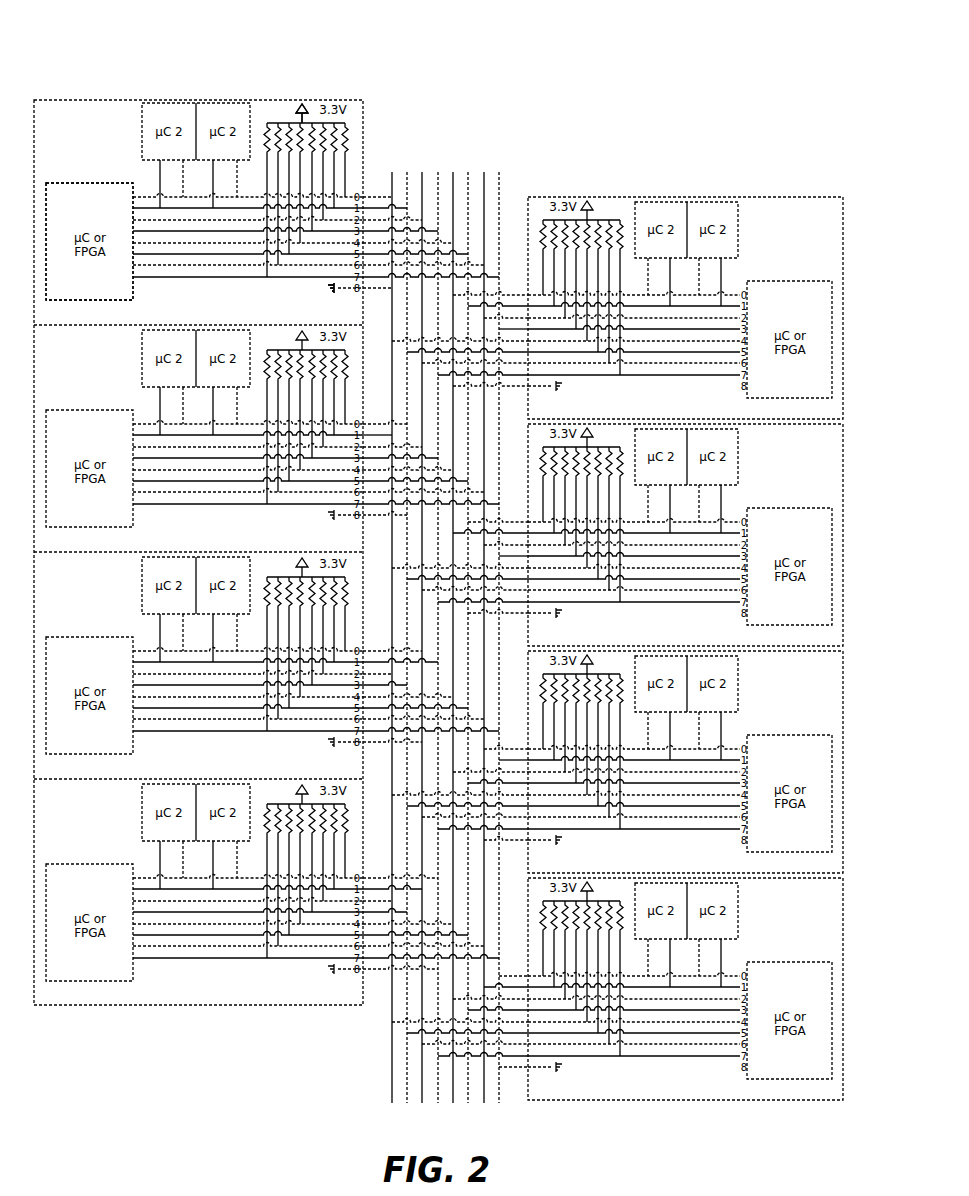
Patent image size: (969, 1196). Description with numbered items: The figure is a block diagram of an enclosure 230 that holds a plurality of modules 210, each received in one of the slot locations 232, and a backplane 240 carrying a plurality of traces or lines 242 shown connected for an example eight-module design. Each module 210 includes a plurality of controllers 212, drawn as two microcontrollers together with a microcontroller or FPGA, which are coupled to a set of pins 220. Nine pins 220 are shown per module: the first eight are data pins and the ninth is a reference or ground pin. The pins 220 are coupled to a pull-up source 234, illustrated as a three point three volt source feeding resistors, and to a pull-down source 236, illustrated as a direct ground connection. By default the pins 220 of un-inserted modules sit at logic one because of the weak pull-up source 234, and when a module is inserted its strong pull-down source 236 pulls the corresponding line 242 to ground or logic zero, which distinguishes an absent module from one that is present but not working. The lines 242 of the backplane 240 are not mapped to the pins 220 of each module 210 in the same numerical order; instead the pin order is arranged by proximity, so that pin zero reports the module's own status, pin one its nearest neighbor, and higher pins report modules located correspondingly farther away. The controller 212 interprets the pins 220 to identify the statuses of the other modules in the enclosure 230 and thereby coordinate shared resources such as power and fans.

The module 210 is at (112, 100).
The controller 212 is at (118, 300).
The pin 220 is at (142, 180).
The enclosure 230 is at (121, 29).
The slot location 232 is at (68, 136).
The pull-up source 234 is at (299, 103).
The pull-down source 236 is at (340, 290).
The backplane 240 is at (478, 70).
The trace/line 242 is at (392, 106).